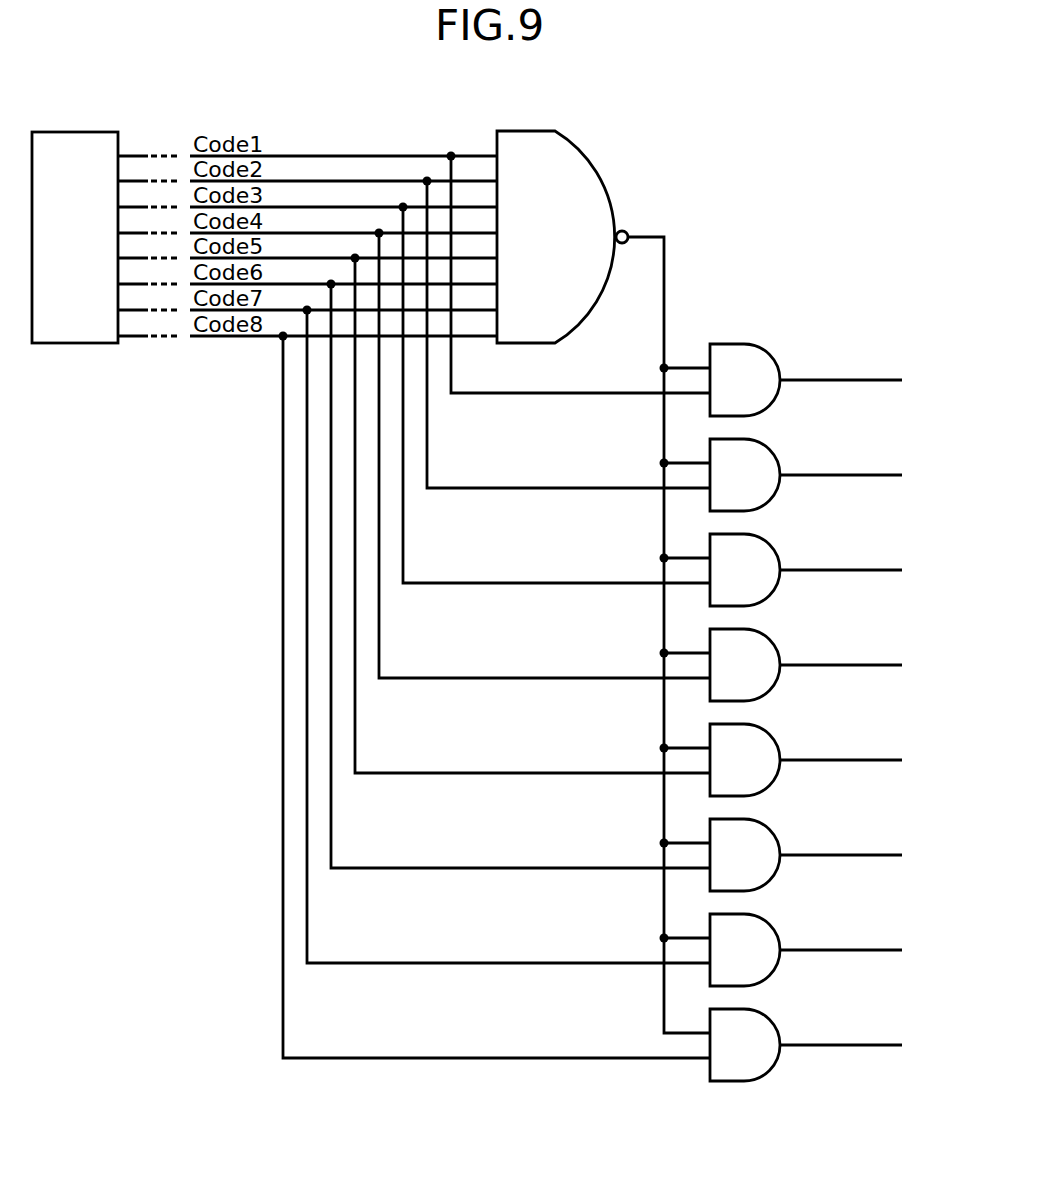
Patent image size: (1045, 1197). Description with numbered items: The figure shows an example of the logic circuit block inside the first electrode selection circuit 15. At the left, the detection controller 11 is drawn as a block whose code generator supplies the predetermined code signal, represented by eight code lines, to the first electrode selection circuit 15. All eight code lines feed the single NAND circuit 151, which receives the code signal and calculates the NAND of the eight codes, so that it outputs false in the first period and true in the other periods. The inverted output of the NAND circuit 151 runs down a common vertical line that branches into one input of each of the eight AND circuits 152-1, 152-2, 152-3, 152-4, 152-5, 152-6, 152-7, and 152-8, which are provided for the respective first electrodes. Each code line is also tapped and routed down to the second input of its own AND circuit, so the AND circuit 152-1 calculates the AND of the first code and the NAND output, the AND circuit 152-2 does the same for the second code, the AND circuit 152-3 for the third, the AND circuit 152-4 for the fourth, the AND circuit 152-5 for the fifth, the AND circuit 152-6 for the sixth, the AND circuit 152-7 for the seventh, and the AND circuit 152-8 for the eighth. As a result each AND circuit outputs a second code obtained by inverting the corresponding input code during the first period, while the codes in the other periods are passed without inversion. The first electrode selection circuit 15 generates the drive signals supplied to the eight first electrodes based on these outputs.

The detection controller 11 is at (79, 130).
The first electrode selection circuit 15 is at (791, 121).
The NAND circuit 151 is at (587, 141).
The AND circuit 152-1 is at (770, 352).
The AND circuit 152-2 is at (770, 447).
The AND circuit 152-3 is at (770, 542).
The AND circuit 152-4 is at (770, 637).
The AND circuit 152-5 is at (770, 732).
The AND circuit 152-6 is at (770, 827).
The AND circuit 152-7 is at (770, 922).
The AND circuit 152-8 is at (770, 1017).